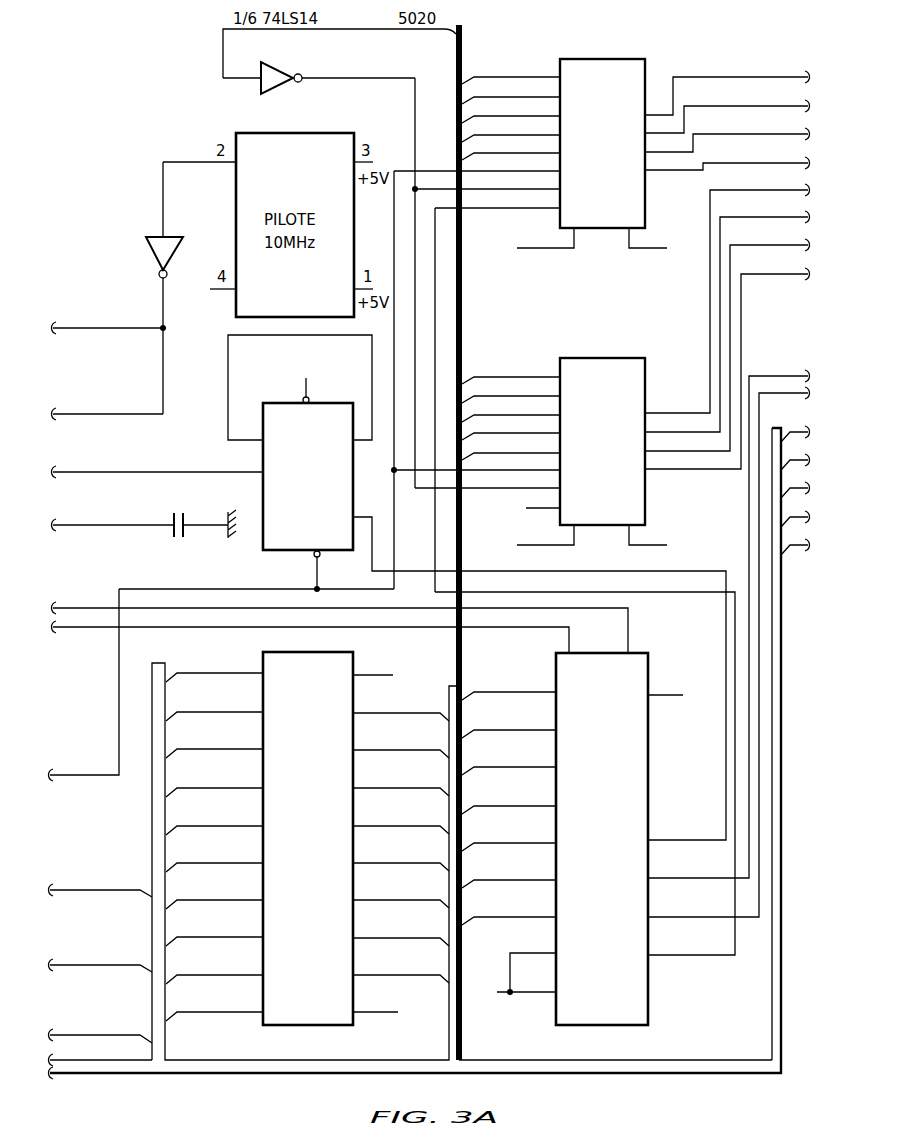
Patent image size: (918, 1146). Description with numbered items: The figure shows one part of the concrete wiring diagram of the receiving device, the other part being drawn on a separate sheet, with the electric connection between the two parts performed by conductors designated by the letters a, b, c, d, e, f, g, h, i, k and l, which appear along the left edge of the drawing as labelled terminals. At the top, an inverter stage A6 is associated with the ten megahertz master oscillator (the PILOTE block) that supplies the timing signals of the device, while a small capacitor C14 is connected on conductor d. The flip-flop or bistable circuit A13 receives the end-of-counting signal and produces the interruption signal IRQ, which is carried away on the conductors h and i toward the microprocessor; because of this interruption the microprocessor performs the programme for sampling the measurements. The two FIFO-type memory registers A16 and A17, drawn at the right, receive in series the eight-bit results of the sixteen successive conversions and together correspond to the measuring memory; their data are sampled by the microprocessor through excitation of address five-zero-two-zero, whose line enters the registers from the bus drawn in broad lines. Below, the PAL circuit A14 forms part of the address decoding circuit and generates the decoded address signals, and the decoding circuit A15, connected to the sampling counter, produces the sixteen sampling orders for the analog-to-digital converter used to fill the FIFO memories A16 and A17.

The inverter A6 is at (268, 176).
The flip-flop circuit A13 is at (422, 587).
The address decoding circuit A14 is at (307, 838).
The decoding circuit A15 is at (595, 828).
The FIFO memory register A16 is at (583, 456).
The FIFO memory register A17 is at (635, 158).
The capacitor 100 pF C14 is at (196, 526).
The conductor a is at (108, 319).
The conductor b is at (108, 405).
The conductor c is at (158, 463).
The conductor d is at (113, 517).
The conductor e is at (340, 619).
The conductor f is at (311, 637).
The conductor g is at (84, 685).
The conductor h is at (101, 882).
The conductor i is at (101, 957).
The conductor k is at (101, 1028).
The conductor l is at (415, 762).